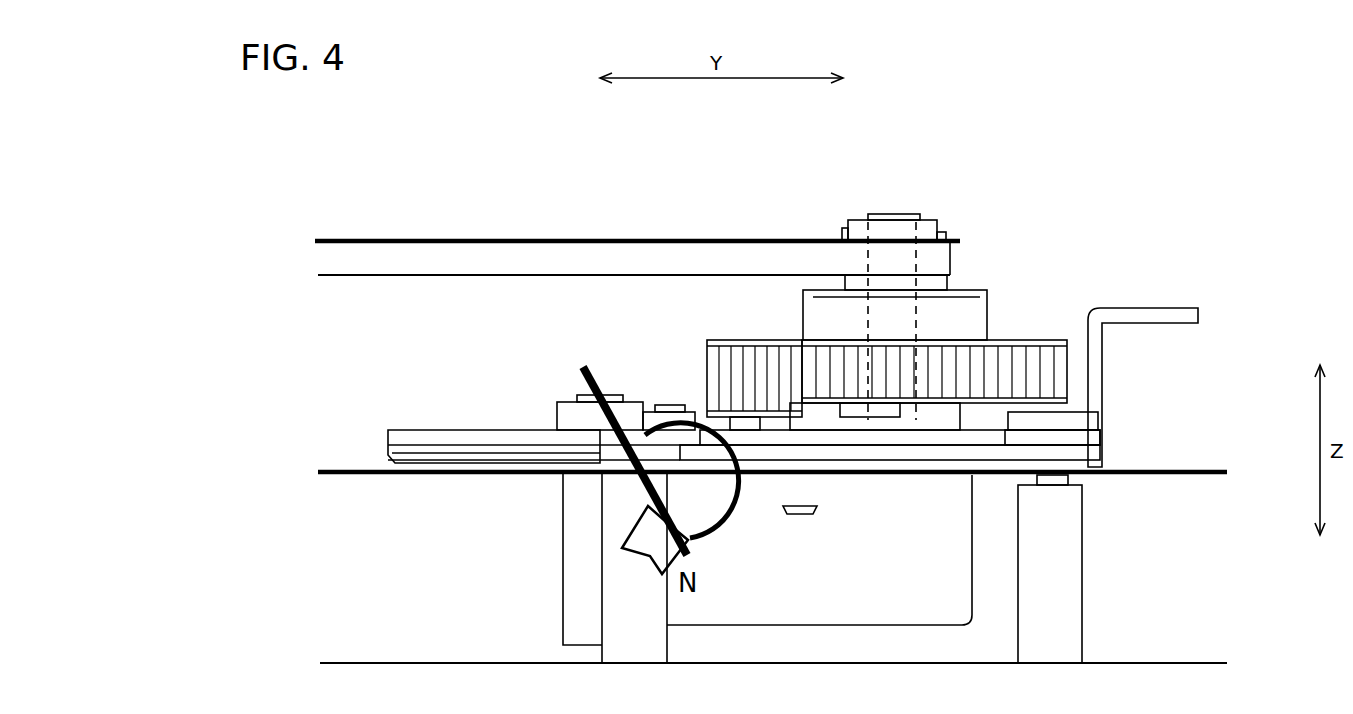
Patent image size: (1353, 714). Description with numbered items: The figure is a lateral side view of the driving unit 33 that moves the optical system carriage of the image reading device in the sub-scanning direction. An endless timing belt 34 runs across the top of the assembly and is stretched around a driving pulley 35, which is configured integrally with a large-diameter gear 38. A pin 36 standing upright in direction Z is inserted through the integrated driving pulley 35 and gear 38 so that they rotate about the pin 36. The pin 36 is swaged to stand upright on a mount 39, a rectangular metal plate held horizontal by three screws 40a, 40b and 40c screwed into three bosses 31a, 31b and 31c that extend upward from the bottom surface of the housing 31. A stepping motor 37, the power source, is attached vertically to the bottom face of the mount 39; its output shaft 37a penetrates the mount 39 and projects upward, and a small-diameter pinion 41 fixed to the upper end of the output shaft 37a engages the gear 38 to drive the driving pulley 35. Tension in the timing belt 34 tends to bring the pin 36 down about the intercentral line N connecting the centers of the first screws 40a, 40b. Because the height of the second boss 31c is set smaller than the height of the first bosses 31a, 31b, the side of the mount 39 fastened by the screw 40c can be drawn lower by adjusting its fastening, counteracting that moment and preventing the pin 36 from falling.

The housing 31 is at (773, 631).
The first boss 31a is at (563, 545).
The first boss 31b is at (615, 627).
The second boss 31c is at (1076, 628).
The driving unit 33 is at (1103, 141).
The timing belt 34 is at (545, 239).
The driving pulley 35 is at (937, 233).
The pin 36 is at (920, 336).
The stepping motor 37 is at (904, 626).
The output shaft 37a is at (745, 432).
The large-diameter gear 38 is at (1132, 363).
The mount 39 is at (445, 438).
The first screw 40a is at (573, 396).
The first screw 40b is at (662, 411).
The screw 40c is at (1088, 420).
The pinion 41 is at (702, 346).